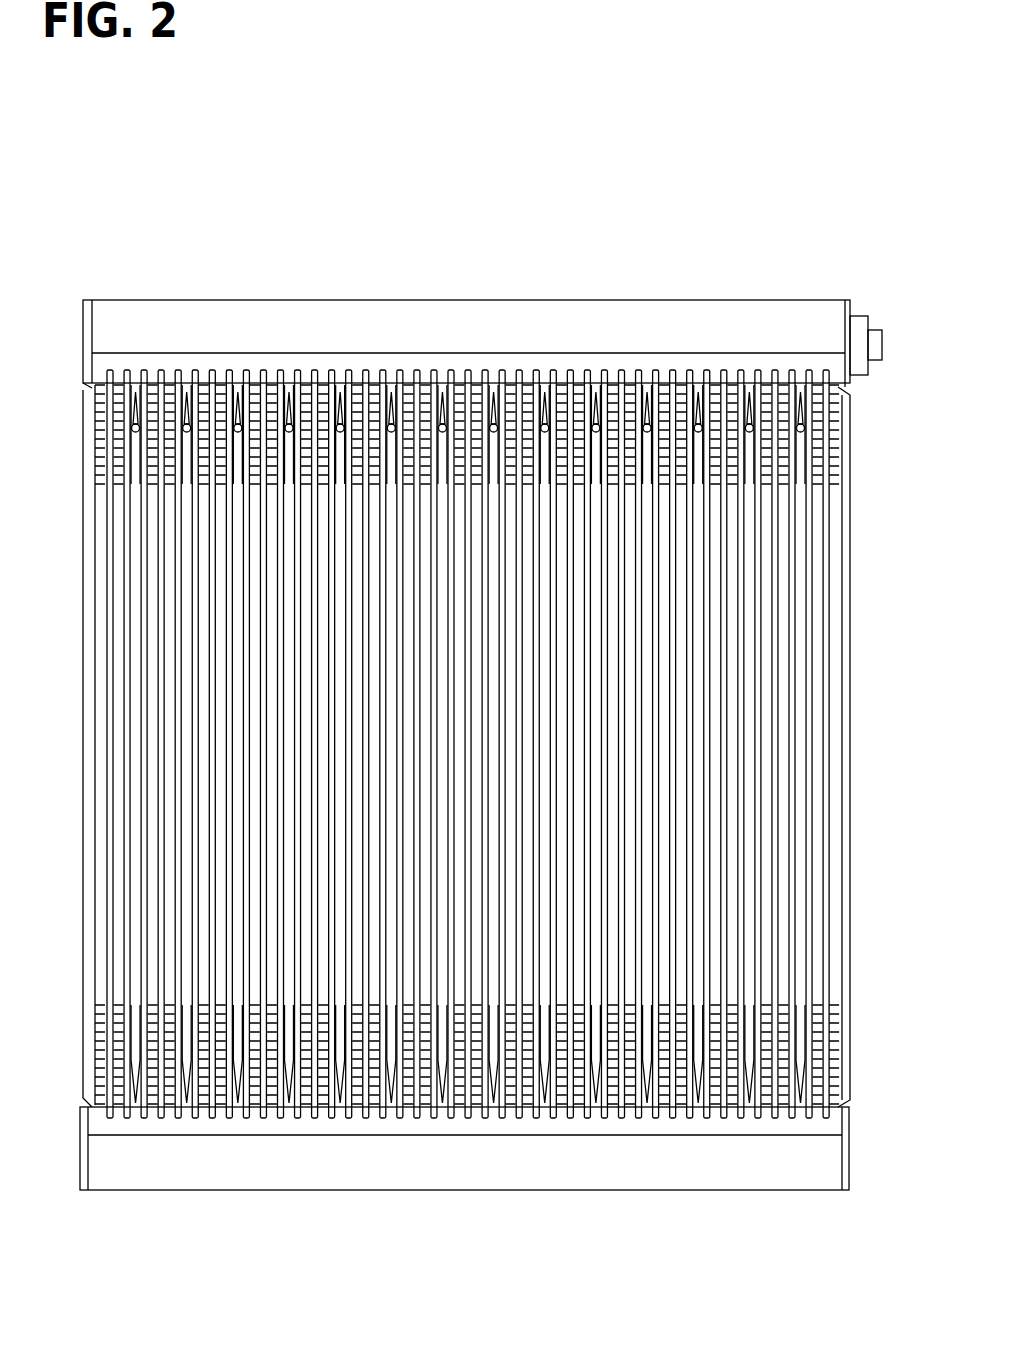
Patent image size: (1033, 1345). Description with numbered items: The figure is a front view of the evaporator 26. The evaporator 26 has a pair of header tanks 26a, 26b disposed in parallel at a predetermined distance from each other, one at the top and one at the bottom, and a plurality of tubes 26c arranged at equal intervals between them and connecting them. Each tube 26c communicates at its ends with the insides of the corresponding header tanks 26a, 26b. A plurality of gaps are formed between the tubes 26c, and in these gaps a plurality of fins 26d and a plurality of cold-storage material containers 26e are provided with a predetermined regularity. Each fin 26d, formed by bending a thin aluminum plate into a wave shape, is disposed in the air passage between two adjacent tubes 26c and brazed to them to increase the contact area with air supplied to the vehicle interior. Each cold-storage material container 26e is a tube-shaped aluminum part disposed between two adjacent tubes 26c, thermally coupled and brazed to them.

The evaporator 26 is at (277, 290).
The header tank 26a is at (404, 299).
The header tank 26b is at (633, 1191).
The tube 26c is at (808, 846).
The fin 26d is at (813, 1008).
The cold-storage material container 26e is at (796, 780).